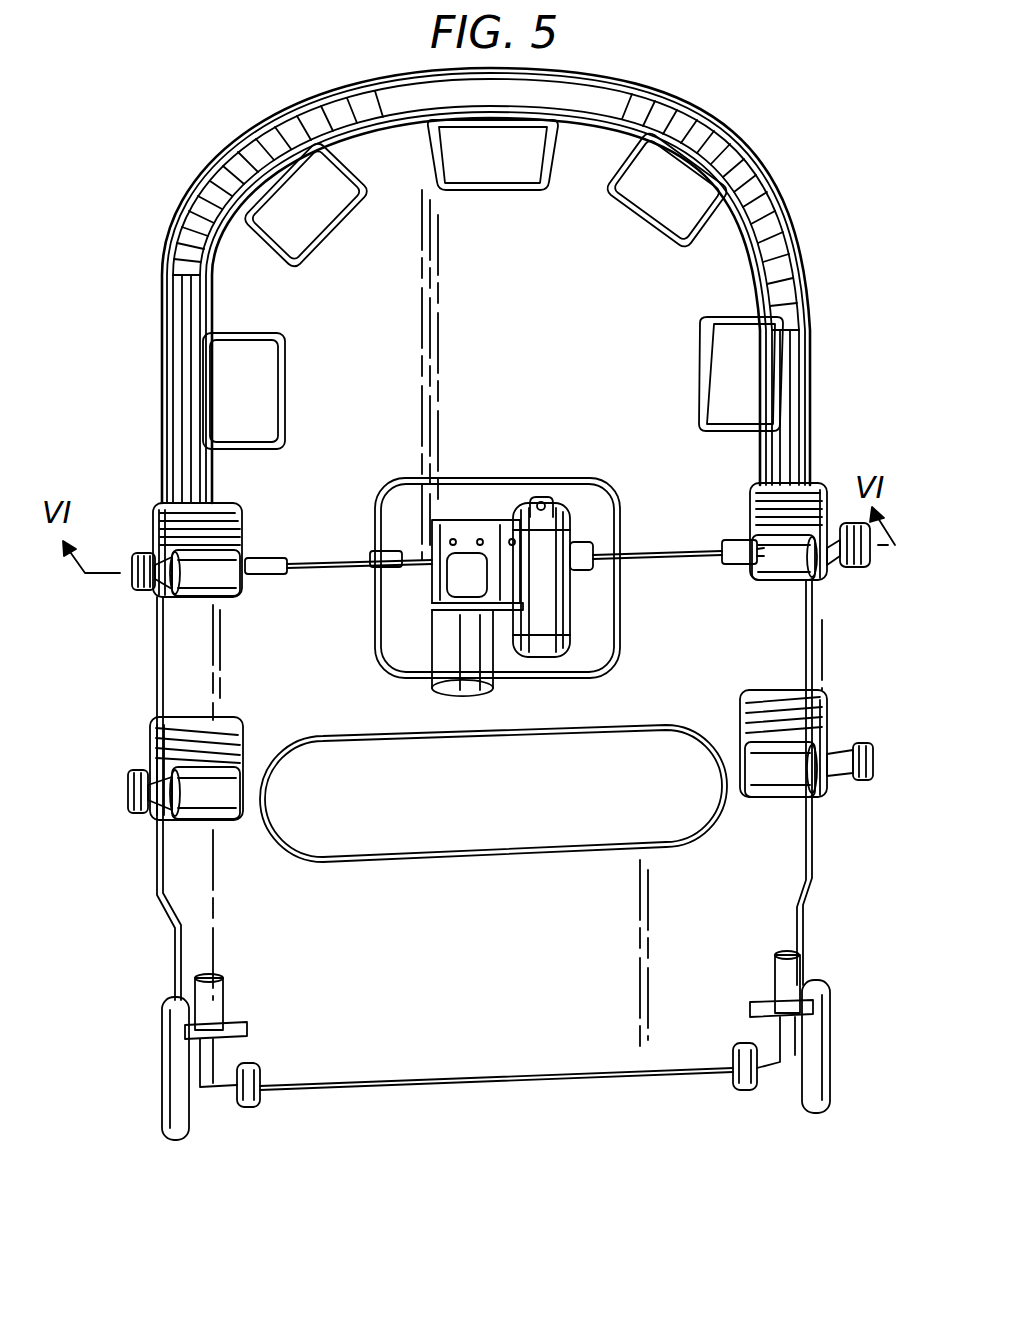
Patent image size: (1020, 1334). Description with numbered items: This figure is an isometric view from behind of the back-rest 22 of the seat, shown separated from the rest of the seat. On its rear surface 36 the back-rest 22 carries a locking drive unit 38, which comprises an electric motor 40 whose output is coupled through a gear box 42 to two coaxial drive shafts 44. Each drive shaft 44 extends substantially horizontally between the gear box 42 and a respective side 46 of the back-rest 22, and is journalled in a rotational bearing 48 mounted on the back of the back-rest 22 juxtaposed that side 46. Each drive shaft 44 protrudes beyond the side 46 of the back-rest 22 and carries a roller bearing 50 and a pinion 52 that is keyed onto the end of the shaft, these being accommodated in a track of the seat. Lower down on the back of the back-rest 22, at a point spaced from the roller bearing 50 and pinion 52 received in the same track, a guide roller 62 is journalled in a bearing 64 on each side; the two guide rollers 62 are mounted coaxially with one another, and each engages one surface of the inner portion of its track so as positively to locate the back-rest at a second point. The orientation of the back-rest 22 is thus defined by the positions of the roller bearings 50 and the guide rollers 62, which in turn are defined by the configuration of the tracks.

The back-rest 22 is at (207, 167).
The rear surface 36 is at (560, 310).
The locking drive unit 38 is at (422, 612).
The electric motor 40 is at (465, 698).
The gear box 42 is at (548, 660).
The drive shaft 44 is at (312, 560).
The side 46 is at (812, 658).
The rotational bearing 48 is at (207, 553).
The roller bearing 50 is at (140, 595).
The pinion 52 is at (137, 587).
The guide roller 62 is at (128, 795).
The bearing 64 is at (197, 802).